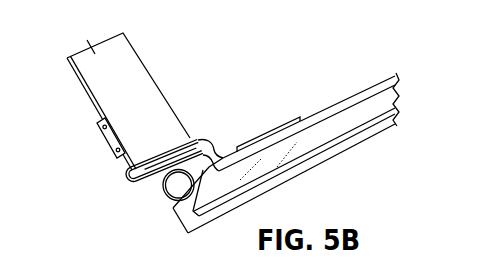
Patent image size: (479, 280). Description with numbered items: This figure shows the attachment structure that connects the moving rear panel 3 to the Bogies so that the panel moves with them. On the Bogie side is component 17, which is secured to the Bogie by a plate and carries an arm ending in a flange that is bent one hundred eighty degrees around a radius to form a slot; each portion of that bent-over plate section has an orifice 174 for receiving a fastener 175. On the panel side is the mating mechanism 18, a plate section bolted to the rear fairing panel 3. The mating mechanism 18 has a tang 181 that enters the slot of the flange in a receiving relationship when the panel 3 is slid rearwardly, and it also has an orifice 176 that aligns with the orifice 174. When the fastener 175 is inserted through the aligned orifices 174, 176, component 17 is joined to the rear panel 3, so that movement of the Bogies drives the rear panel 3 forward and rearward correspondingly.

The moving rear panel 3 is at (333, 108).
The component 17 is at (100, 72).
The mating mechanism 18 is at (217, 157).
The orifice 174 is at (161, 142).
The fastener 175 is at (167, 201).
The orifice 176 is at (157, 183).
The tang 181 is at (128, 185).